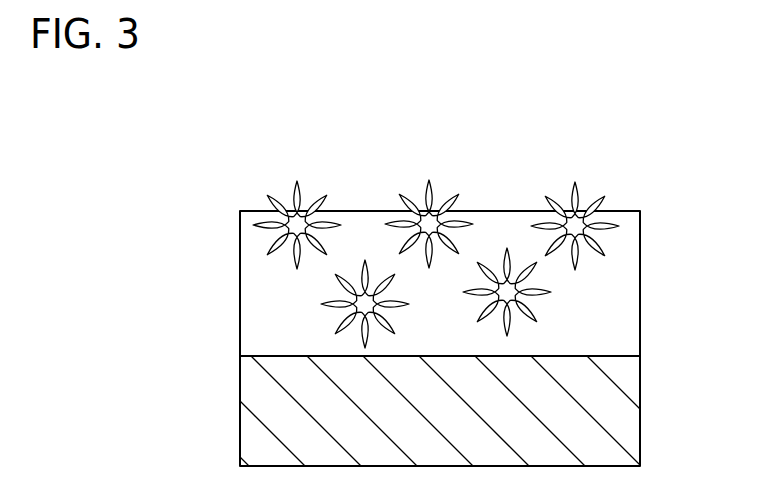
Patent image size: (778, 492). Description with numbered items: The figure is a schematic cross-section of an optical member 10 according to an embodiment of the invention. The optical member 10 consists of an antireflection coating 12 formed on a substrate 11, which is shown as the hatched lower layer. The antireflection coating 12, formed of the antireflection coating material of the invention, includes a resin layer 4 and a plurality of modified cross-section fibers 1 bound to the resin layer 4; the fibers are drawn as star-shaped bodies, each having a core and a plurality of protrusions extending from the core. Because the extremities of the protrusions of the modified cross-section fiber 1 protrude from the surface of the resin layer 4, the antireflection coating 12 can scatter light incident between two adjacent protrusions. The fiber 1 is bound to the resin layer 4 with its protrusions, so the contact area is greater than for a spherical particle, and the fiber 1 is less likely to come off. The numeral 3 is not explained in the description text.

The optical member 10 is at (237, 163).
The antireflection coating 12 is at (698, 225).
The resin layer 4 is at (610, 300).
The phosphor particle 3 is at (290, 181).
The modified cross-section fiber 1 is at (613, 225).
The substrate 11 is at (609, 407).